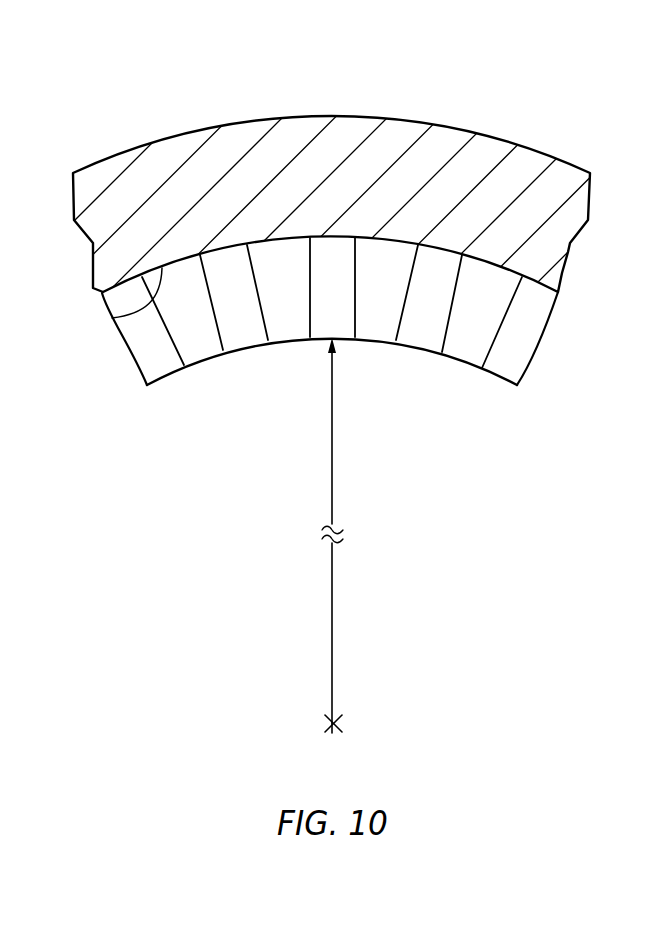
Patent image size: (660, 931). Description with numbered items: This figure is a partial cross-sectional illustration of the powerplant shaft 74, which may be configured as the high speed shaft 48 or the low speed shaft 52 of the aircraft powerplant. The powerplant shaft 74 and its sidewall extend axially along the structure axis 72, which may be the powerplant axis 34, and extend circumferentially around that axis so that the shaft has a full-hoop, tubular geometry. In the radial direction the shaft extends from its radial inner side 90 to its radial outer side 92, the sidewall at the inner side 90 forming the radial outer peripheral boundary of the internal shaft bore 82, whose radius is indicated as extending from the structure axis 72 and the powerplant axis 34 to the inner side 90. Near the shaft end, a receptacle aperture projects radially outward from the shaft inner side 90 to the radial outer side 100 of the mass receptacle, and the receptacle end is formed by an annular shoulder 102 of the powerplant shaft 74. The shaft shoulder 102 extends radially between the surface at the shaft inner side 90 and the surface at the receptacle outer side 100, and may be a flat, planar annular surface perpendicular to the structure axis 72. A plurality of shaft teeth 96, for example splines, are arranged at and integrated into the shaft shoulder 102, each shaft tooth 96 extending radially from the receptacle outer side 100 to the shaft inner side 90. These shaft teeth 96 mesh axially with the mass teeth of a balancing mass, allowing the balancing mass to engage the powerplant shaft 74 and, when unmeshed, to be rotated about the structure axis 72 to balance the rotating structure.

The high speed shaft 48 is at (330, 243).
The low speed shaft 52 is at (330, 243).
The powerplant shaft 74 is at (330, 243).
The radial outer side 92 is at (78, 173).
The shaft teeth 96 is at (163, 368).
The radial inner side 90 is at (157, 382).
The radial outer side of the mass receptacle 100 is at (112, 318).
The annular shoulder 102 is at (550, 350).
The internal shaft bore 82 is at (432, 579).
The powerplant axis 34 is at (392, 734).
The structure axis 72 is at (336, 723).